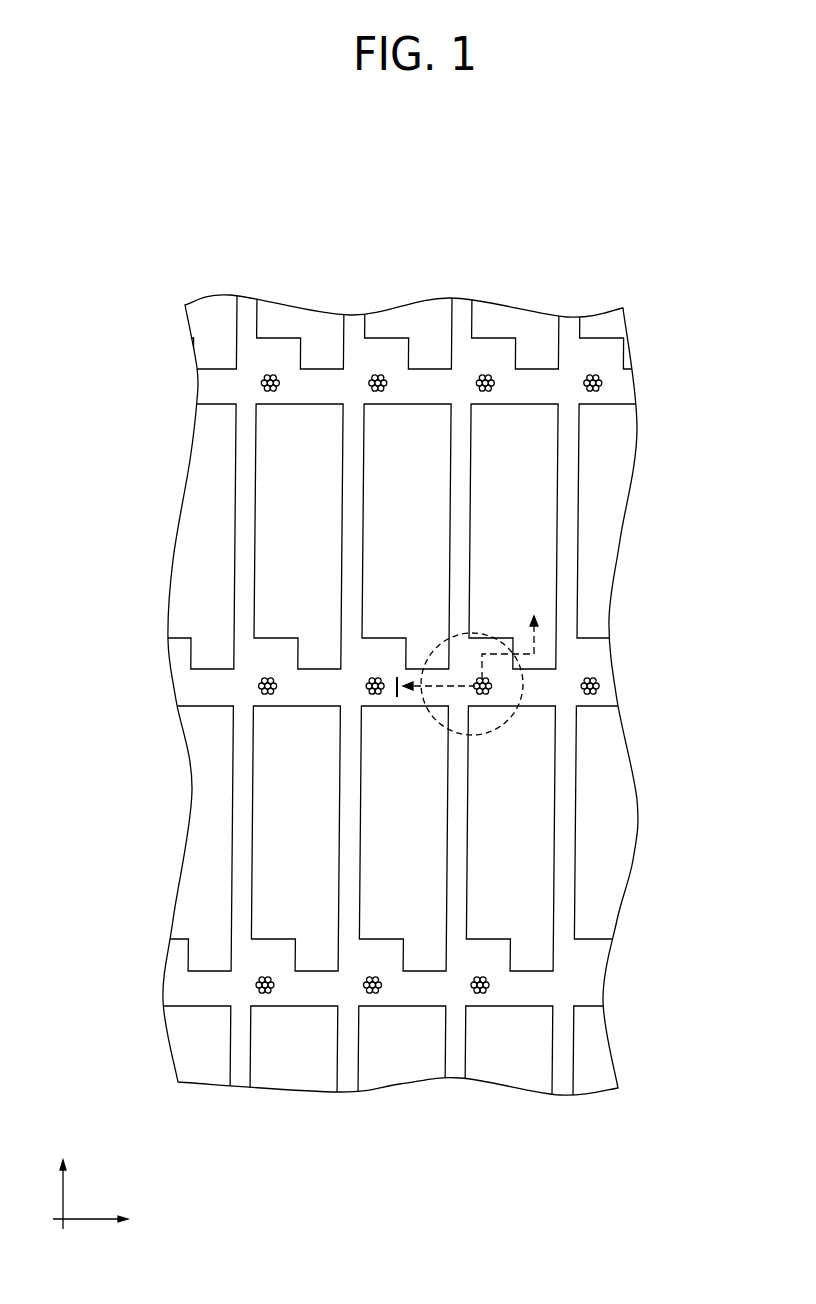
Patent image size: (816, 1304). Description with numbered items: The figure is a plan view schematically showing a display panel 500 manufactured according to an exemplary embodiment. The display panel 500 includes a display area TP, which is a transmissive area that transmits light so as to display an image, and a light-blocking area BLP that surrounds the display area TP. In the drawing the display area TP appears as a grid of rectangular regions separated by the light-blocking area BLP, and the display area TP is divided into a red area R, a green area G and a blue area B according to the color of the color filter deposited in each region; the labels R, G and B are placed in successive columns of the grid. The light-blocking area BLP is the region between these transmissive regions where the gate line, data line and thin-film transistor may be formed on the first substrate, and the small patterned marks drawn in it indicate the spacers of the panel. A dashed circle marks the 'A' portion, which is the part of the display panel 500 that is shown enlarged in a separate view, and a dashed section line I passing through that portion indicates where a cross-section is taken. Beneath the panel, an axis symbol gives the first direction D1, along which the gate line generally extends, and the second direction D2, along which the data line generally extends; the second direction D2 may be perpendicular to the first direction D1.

The display panel 500 is at (435, 236).
The display area TP is at (537, 454).
The light-blocking area BLP is at (570, 510).
The 'A' portion A is at (502, 725).
The red area R is at (297, 687).
The green area G is at (405, 687).
The blue area B is at (510, 745).
The section line I-I' I is at (534, 608).
The first direction D1 is at (109, 1222).
The second direction D2 is at (67, 1178).